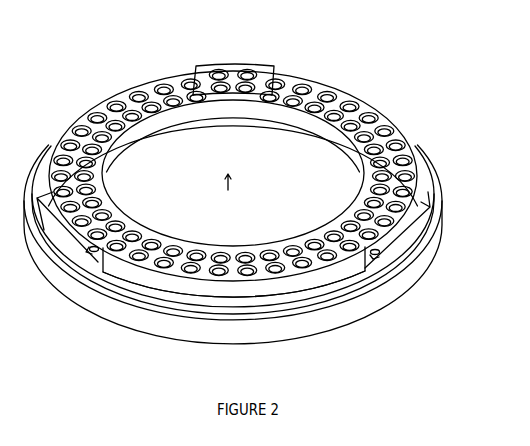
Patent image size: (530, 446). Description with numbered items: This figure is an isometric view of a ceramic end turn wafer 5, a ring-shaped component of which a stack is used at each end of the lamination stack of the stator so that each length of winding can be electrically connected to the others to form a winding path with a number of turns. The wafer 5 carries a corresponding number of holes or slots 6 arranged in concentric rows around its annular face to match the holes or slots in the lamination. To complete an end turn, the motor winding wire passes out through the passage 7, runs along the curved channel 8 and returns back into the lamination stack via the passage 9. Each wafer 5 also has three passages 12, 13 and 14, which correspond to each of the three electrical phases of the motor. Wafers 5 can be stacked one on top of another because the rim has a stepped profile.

The ceramic wafer 5 is at (393, 132).
The holes or slots 6 is at (218, 75).
The passage 7 is at (376, 253).
The curved channel 8 is at (272, 297).
The passage 9 is at (93, 250).
The passage 12 is at (423, 175).
The passage 13 is at (192, 298).
The passage 14 is at (48, 168).